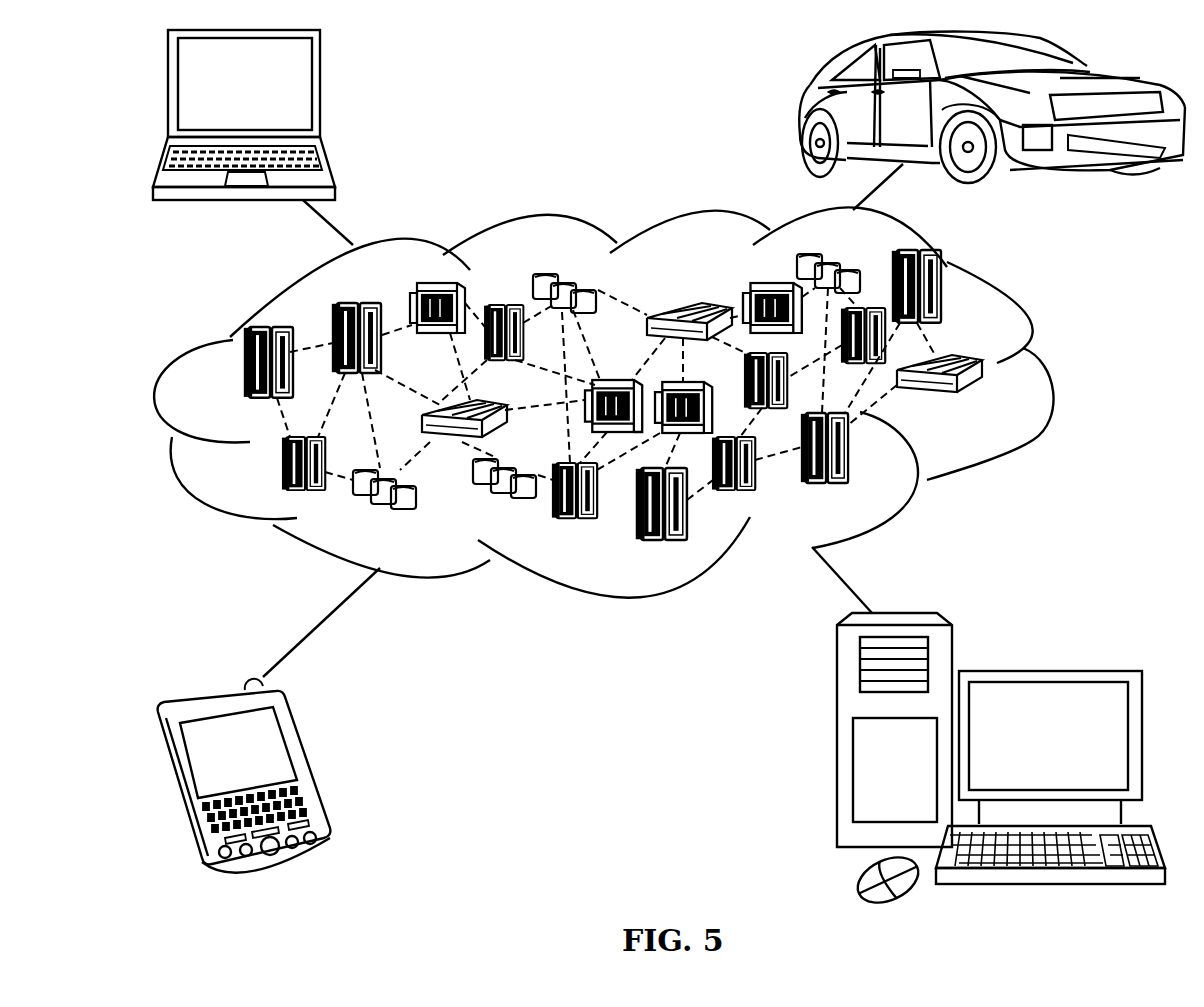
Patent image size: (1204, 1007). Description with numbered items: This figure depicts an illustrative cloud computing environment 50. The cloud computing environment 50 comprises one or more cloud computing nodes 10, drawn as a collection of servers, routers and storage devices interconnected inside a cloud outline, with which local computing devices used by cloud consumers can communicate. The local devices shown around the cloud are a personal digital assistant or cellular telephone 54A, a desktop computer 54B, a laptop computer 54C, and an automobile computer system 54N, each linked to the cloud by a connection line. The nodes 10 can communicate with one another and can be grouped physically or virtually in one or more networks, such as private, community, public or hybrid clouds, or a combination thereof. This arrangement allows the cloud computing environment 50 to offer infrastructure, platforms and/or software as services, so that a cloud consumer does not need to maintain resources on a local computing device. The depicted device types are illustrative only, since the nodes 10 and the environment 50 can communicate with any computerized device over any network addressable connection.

The laptop computer 54C is at (322, 95).
The automobile computer system 54N is at (800, 110).
The personal digital assistant (PDA) or cellular telephone 54A is at (307, 764).
The desktop computer 54B is at (1048, 670).
The cloud computing environment 50 is at (1045, 373).
The cloud computing node 10 is at (982, 400).